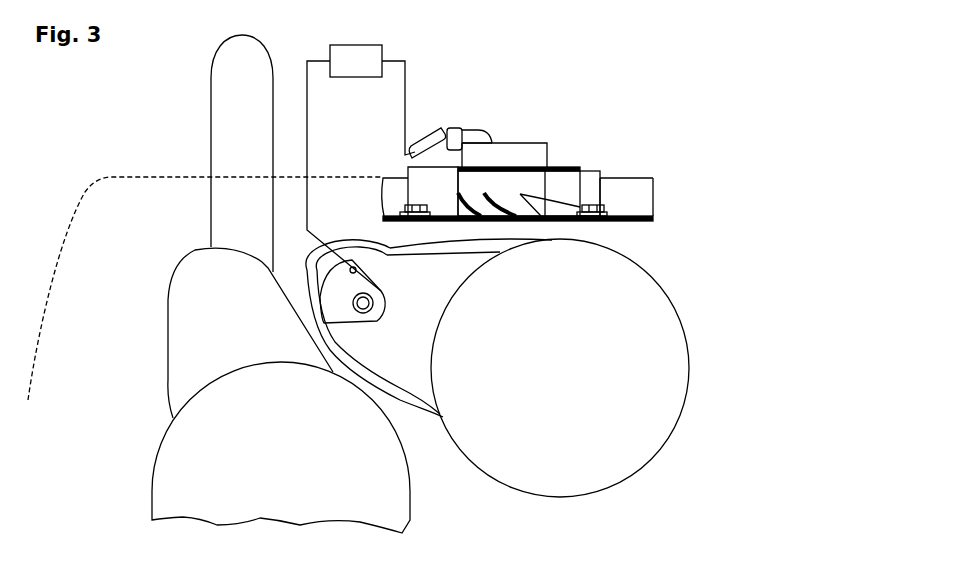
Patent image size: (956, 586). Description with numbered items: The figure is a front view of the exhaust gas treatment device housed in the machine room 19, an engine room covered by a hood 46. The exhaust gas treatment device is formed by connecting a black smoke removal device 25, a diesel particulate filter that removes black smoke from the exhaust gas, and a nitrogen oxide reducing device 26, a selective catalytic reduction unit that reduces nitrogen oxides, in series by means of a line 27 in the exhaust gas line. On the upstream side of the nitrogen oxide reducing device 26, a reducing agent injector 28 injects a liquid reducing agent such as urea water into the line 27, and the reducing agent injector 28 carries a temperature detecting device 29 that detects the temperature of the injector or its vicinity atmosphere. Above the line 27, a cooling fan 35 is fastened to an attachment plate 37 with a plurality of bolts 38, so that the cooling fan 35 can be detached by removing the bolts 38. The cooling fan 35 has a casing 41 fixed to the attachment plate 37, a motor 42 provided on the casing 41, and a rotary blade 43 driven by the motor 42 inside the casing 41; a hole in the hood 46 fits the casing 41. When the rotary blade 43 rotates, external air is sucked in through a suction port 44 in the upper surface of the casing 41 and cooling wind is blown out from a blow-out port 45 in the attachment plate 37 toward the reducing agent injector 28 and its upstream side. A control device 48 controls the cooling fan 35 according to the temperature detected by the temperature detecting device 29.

The machine room 19 is at (670, 258).
The black smoke removal device 25 is at (673, 372).
The nitrogen oxide reducing device 26 is at (162, 488).
The line 27 is at (303, 279).
The reducing agent injector 28 is at (381, 290).
The temperature detecting device 29 is at (356, 266).
The cooling fan 35 is at (546, 142).
The attachment plate 37 is at (652, 190).
The bolts 38 is at (608, 210).
The casing 41 is at (440, 175).
The motor 42 is at (477, 150).
The rotary blade 43 is at (500, 197).
The suction port 44 is at (560, 170).
The blow-out port 45 is at (573, 223).
The hood 46 is at (128, 176).
The control device 48 is at (357, 45).